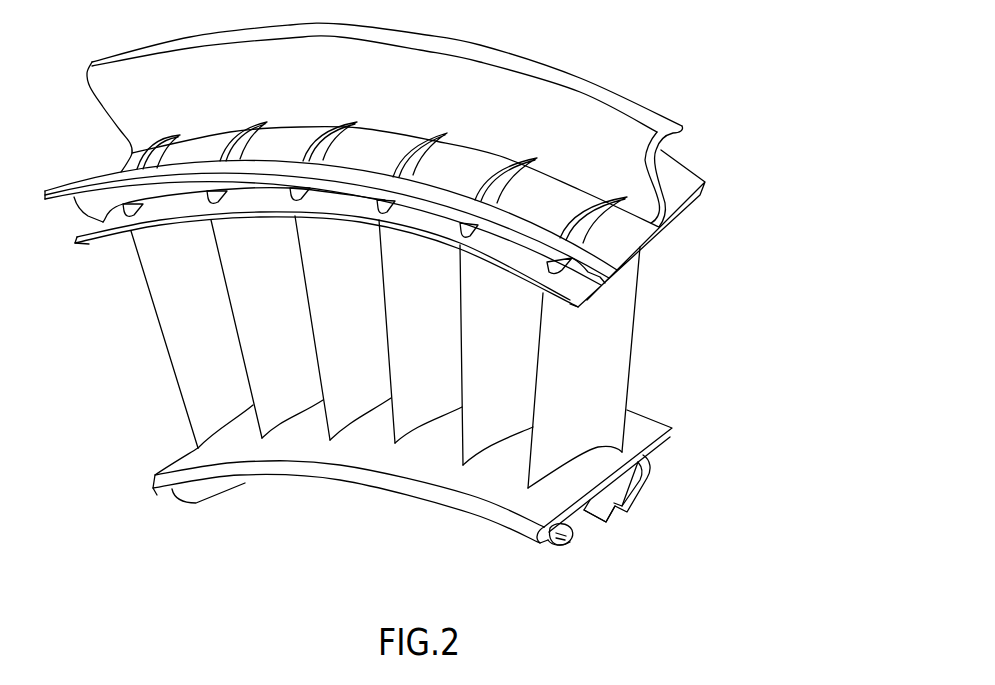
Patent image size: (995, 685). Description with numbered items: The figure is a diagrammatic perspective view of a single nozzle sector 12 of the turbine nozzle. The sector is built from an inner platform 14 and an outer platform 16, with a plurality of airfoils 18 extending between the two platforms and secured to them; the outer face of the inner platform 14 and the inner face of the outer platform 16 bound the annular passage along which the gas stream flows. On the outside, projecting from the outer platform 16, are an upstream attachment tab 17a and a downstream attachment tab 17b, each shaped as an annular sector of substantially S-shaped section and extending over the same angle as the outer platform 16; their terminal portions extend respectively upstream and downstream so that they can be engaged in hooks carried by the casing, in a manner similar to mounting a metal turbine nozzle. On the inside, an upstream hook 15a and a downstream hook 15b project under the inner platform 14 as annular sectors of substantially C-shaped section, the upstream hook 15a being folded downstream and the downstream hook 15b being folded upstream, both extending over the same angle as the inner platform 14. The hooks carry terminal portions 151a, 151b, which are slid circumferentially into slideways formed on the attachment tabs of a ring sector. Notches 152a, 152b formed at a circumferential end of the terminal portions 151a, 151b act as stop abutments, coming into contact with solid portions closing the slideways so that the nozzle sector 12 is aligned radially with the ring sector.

The nozzle sector 12 is at (396, 310).
The inner platform 14 is at (653, 430).
The upstream hook 15a is at (583, 561).
The downstream hook 15b is at (651, 489).
The outer platform 16 is at (683, 187).
The upstream attachment tab 17a is at (512, 227).
The downstream attachment tab 17b is at (607, 103).
The airfoil 18 is at (598, 377).
The terminal portion of upstream hook 151a is at (570, 530).
The terminal portion of downstream hook 151b is at (597, 503).
The notch 152a is at (574, 545).
The notch 152b is at (609, 519).